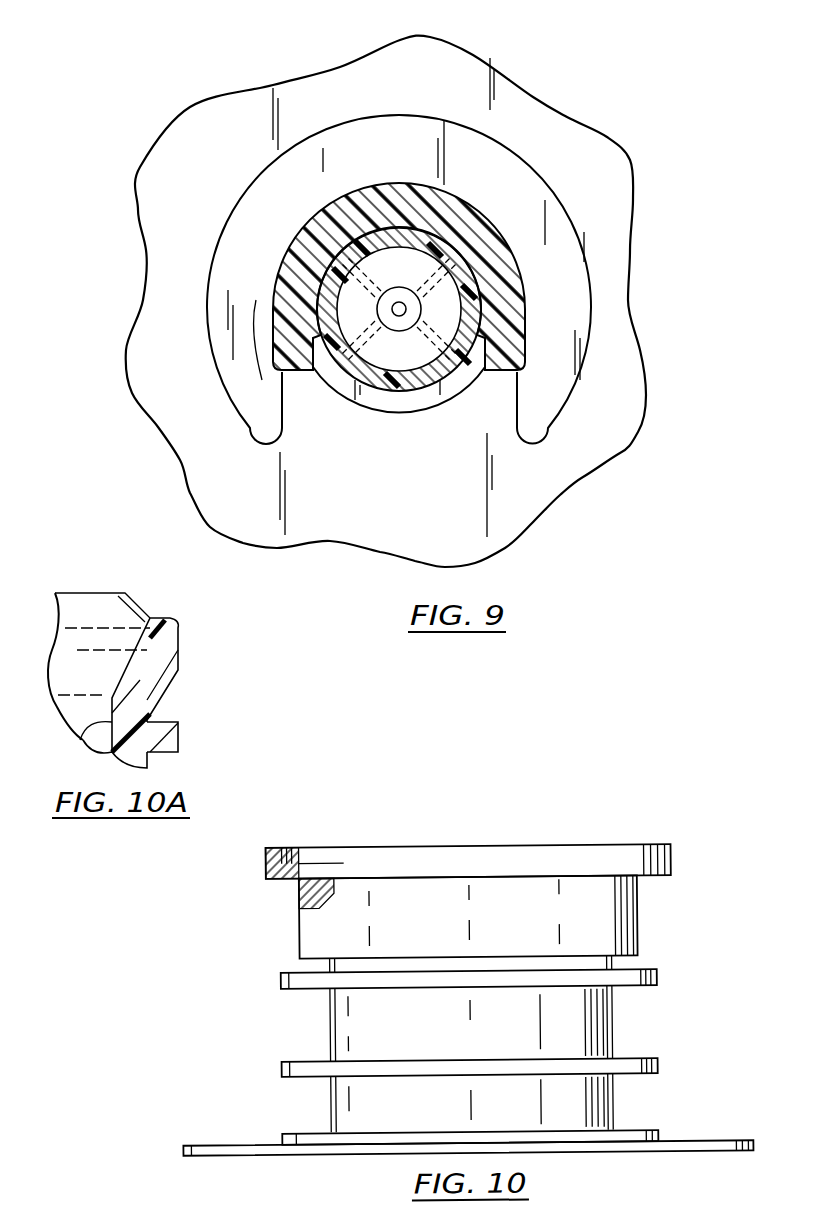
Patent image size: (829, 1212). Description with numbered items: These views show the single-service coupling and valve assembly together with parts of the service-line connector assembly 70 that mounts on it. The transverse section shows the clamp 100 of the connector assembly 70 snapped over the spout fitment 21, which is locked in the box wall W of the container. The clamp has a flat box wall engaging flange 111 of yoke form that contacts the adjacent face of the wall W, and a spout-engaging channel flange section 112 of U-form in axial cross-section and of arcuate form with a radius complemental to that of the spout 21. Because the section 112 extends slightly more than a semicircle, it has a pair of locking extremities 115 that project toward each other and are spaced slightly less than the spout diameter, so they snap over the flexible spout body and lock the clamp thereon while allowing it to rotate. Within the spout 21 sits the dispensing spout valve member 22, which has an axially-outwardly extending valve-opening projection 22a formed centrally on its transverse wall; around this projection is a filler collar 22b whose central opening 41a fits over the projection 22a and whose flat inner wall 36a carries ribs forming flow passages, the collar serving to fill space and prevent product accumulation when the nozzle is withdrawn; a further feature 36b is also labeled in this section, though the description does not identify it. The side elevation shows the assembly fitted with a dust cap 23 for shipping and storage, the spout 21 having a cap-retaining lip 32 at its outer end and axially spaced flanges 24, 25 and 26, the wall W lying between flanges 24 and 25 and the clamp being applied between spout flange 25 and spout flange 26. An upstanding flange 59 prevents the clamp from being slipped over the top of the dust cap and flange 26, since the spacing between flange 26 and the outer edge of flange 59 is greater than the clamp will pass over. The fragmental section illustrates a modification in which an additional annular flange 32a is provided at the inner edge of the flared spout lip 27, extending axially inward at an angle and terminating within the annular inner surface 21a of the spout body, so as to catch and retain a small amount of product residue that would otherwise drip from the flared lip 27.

In FIG. 9, the service-line connector assembly 70 is at (534, 135).
In FIG. 9, the box wall W is at (547, 487).
In FIG. 9, the clamp 100 is at (243, 186).
In FIG. 9, the box wall engaging flange 111 is at (230, 268).
In FIG. 9, the spout-engaging channel flange section 112 is at (513, 272).
In FIG. 9, the locking extremities 115 is at (330, 353).
In FIG. 9, the dispensing spout valve member 22 is at (372, 386).
In FIG. 9, the valve-opening projection 22a is at (388, 288).
In FIG. 9, the filler collar 22b is at (447, 308).
In FIG. 9, the spout fitment 21 is at (382, 399).
In FIG. 10A, the spout fitment 21 is at (152, 708).
In FIG. 10, the spout fitment 21 is at (329, 1017).
In FIG. 9, the central opening 41a is at (389, 311).
In FIG. 9, the flat inner wall 36a is at (424, 359).
In FIG. 9, the slot 36b is at (430, 277).
In FIG. 9, the spout flange 25 is at (420, 407).
In FIG. 10, the spout flange 25 is at (657, 1066).
In FIG. 10A, the additional annular flange 32a is at (140, 600).
In FIG. 10A, the cap-retaining lip 32 is at (187, 622).
In FIG. 10, the cap-retaining lip 32 is at (312, 881).
In FIG. 10A, the flared spout lip 27 is at (163, 672).
In FIG. 10A, the annular inner surface 21a is at (92, 731).
In FIG. 10A, the spout flange 26 is at (180, 739).
In FIG. 10, the spout flange 26 is at (657, 976).
In FIG. 10, the upstanding flange 59 is at (273, 847).
In FIG. 10, the dust cap 23 is at (498, 900).
In FIG. 10, the spout flange 24 is at (306, 1137).